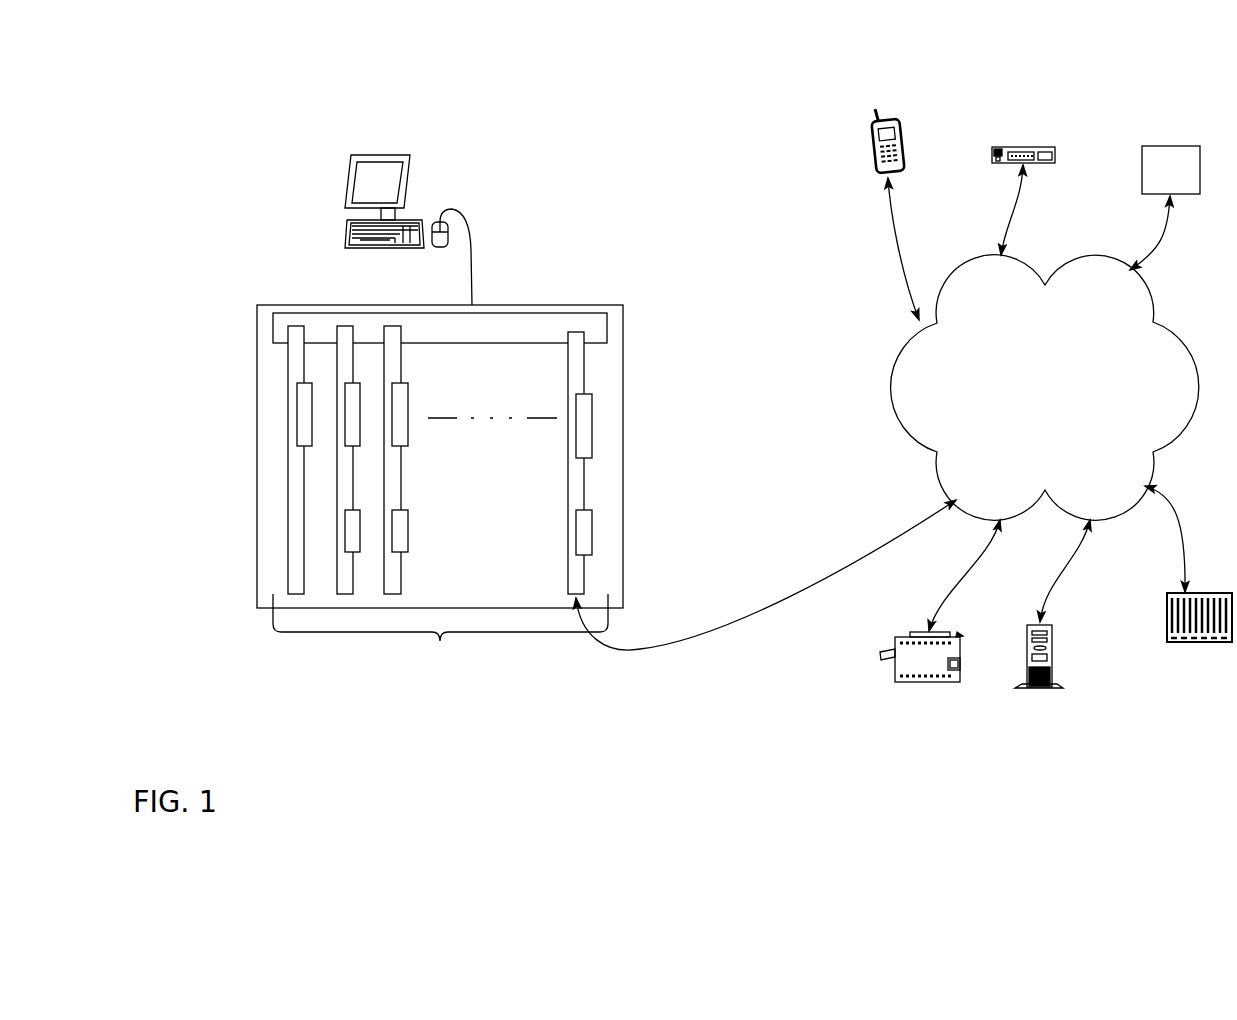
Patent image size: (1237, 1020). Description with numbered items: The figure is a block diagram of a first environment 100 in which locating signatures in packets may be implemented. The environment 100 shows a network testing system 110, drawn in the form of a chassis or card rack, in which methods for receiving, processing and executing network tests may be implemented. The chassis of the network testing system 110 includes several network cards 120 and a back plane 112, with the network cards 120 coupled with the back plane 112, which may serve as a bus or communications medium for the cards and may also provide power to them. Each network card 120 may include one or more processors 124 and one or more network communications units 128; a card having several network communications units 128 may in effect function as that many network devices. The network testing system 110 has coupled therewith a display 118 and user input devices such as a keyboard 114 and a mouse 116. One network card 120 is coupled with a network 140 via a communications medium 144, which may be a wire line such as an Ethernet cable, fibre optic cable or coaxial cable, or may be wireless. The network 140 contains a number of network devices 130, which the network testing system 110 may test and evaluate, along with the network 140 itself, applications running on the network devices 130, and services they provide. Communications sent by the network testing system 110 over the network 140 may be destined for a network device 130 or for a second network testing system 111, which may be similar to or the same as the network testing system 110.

The environment 100 is at (238, 46).
The network testing system 110 is at (497, 305).
The second network testing system 111 is at (1165, 208).
The back plane 112 is at (607, 330).
The keyboard 114 is at (347, 233).
The mouse 116 is at (441, 249).
The display 118 is at (353, 186).
The network card 120 is at (440, 524).
The processor 124 is at (592, 418).
The network communications unit 128 is at (592, 530).
The network device 130 is at (1044, 402).
The network 140 is at (1045, 387).
The communications medium 144 is at (640, 650).